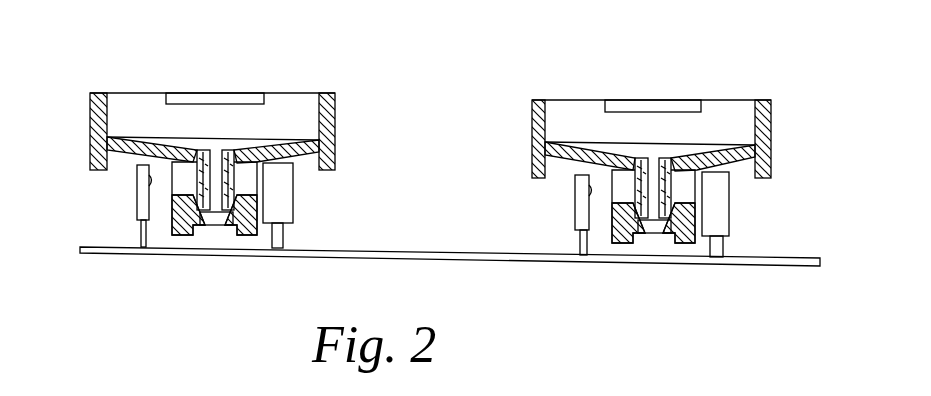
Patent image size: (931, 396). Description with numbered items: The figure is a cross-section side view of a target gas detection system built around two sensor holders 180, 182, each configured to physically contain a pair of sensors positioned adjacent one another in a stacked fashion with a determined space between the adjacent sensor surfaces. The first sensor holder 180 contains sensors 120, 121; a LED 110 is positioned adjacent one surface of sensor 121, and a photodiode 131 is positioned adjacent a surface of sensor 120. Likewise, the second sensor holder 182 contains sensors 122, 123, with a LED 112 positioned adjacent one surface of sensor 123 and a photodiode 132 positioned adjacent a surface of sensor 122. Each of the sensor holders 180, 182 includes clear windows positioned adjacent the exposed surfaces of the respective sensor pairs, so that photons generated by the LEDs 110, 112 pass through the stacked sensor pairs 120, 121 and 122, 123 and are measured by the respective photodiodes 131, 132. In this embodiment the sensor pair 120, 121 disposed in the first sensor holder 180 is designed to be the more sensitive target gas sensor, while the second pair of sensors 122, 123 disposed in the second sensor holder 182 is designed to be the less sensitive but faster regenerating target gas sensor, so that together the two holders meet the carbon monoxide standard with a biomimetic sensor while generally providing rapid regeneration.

The sensor holder 180 is at (135, 92).
The sensor holder 182 is at (578, 100).
The LED 110 is at (137, 193).
The LED 112 is at (575, 210).
The sensor 120 is at (232, 212).
The sensor 121 is at (203, 212).
The sensor 122 is at (665, 220).
The sensor 123 is at (645, 220).
The photodiode 131 is at (293, 195).
The photodiode 132 is at (730, 220).